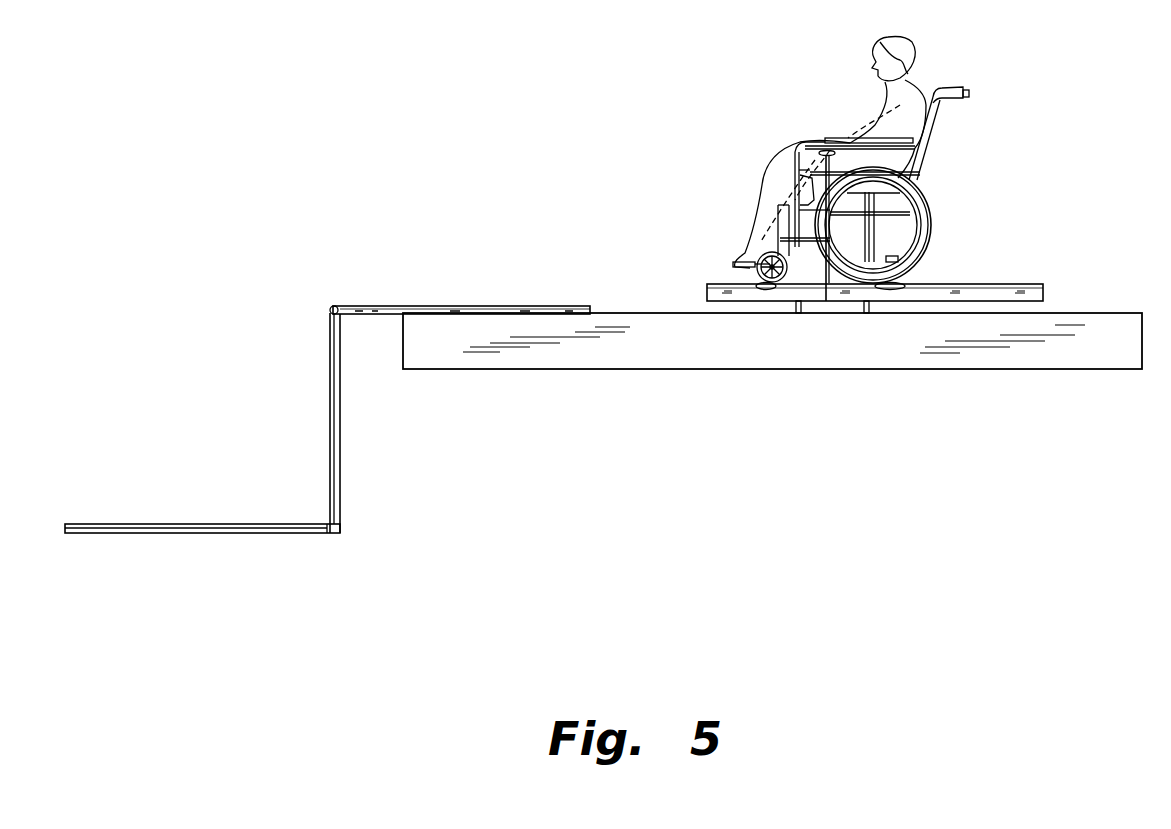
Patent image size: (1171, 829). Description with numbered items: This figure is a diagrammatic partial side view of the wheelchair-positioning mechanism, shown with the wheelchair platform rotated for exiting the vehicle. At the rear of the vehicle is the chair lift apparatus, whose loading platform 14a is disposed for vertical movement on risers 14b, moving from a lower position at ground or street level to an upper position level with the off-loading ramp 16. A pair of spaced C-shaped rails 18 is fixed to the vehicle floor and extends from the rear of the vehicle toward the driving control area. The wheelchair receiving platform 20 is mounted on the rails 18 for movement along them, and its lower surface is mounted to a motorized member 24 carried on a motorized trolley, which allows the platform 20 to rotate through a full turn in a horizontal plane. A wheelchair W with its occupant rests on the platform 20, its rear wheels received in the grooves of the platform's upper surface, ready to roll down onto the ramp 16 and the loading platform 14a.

The loading platform 14a is at (98, 523).
The risers 14b is at (341, 500).
The off-loading ramp 16 is at (410, 306).
The C-shaped rails 18 is at (849, 370).
The wheelchair receiving platform 20 is at (1013, 284).
The motorized member 24 is at (866, 313).
The wheelchair W is at (918, 145).